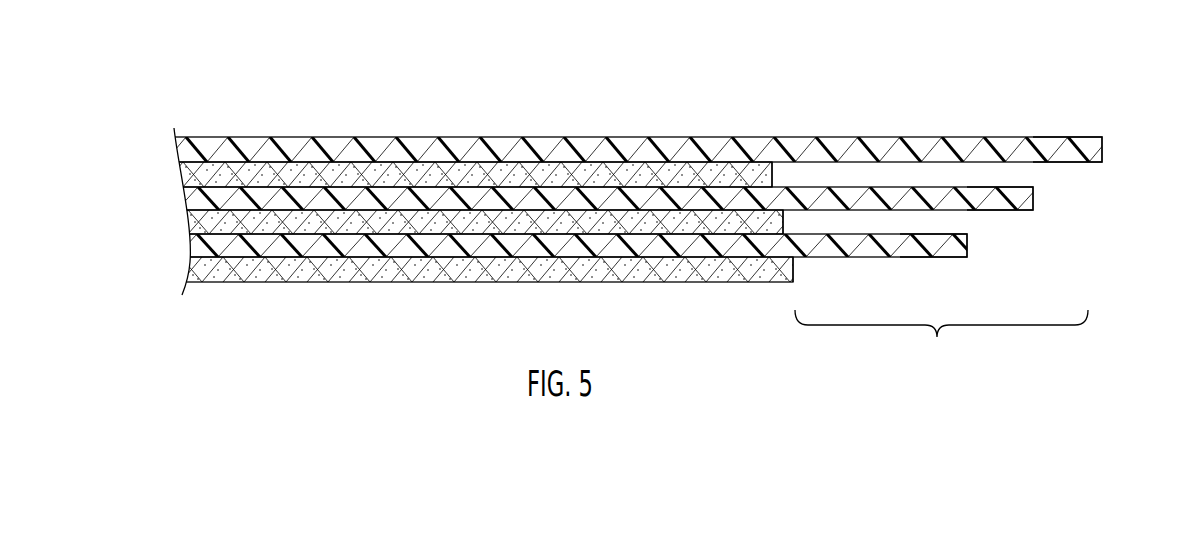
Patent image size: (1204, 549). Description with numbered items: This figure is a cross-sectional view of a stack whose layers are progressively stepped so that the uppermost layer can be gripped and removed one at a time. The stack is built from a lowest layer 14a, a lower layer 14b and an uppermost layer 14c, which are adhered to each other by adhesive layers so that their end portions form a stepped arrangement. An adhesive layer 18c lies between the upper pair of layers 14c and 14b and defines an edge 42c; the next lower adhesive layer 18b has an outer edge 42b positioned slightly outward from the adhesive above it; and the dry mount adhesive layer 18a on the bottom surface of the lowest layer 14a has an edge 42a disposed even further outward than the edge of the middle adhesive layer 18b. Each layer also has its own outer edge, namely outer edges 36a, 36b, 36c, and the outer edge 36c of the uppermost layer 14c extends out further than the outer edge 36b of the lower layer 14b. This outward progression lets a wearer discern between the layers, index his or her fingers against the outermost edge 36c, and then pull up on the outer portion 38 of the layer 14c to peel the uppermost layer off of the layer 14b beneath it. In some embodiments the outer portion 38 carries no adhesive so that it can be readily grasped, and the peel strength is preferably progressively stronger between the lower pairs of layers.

The lowest layer 14a is at (850, 247).
The lower layer 14b is at (748, 200).
The uppermost layer 14c is at (660, 150).
The dry mount adhesive layer 18a is at (478, 265).
The middle adhesive layer 18b is at (478, 222).
The adhesive layer 18c is at (593, 172).
The outer edge 36a is at (968, 248).
The outer edge 36b is at (1034, 196).
The outer edge 36c is at (1104, 150).
The edge 42a is at (795, 271).
The outer edge 42b is at (787, 222).
The edge 42c is at (776, 170).
The outer portion 38 is at (937, 337).